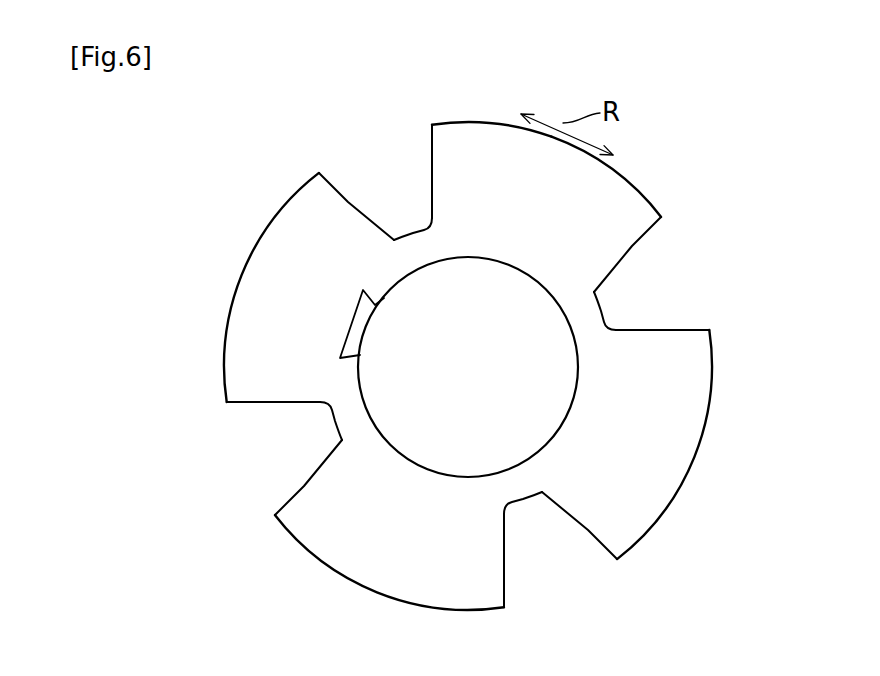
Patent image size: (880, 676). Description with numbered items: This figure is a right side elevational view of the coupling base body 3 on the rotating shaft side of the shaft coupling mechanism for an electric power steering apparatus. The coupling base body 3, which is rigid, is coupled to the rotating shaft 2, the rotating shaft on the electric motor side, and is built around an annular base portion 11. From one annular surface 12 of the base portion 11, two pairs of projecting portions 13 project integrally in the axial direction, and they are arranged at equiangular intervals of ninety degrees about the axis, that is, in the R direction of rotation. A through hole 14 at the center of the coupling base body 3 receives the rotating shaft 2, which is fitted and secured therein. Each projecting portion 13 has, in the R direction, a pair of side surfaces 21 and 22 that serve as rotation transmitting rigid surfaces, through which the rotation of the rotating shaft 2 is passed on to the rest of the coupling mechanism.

The rotating shaft 2 is at (476, 384).
The coupling base body 3 is at (240, 266).
The annular base portion 11 is at (570, 163).
The annular surface 12 is at (657, 447).
The projecting portions 13 is at (386, 170).
The through hole 14 is at (407, 456).
The side surface 21 is at (433, 170).
The side surface 22 is at (348, 202).